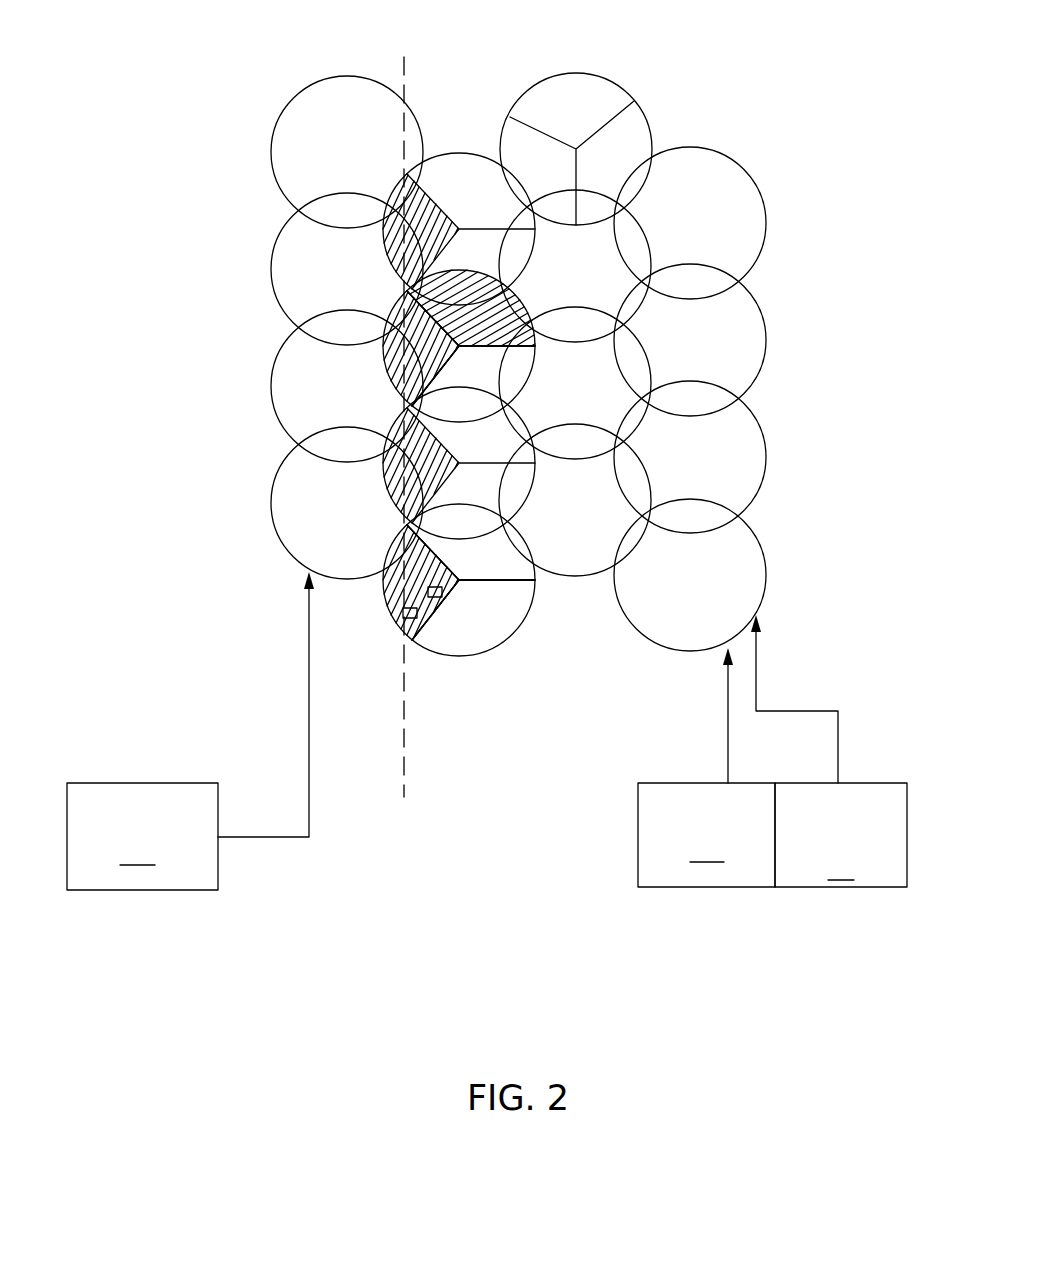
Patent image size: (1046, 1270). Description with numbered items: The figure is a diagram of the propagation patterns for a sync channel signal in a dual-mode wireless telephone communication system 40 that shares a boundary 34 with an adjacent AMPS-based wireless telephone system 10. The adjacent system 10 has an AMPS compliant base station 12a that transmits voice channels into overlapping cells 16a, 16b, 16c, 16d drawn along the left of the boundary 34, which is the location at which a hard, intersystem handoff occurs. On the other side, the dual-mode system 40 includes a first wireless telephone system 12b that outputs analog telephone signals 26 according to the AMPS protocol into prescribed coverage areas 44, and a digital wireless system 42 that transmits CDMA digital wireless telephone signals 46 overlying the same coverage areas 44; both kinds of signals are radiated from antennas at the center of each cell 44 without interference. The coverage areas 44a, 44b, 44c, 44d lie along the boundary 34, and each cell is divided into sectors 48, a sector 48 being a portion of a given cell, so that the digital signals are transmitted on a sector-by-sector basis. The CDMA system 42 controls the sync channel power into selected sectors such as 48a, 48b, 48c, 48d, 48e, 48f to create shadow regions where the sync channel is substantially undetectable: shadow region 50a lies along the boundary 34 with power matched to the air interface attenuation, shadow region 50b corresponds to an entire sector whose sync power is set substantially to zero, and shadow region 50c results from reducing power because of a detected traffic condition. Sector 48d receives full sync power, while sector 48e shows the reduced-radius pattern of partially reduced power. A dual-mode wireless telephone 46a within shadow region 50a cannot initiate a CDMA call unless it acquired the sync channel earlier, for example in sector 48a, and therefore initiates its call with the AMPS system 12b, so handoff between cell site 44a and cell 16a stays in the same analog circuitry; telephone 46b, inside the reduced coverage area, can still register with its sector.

The AMPS-based wireless telephone system 10 is at (245, 551).
The AMPS compliant base station 12a is at (142, 836).
The first wireless telephone system 12b is at (706, 835).
The cell 16a is at (272, 518).
The cell 16b is at (272, 382).
The cell 16c is at (272, 260).
The cell 16d is at (272, 148).
The analog telephone signals 26 is at (728, 735).
The boundary 34 is at (405, 737).
The dual-mode wireless telephone communication system 40 is at (703, 529).
The digital wireless system 42 is at (841, 835).
The prescribed coverage areas 44 is at (740, 163).
The cell site 44a is at (530, 613).
The coverage area 44b is at (533, 488).
The coverage area 44c is at (537, 358).
The coverage area 44d is at (533, 243).
The digital wireless telephone signals 46 is at (829, 711).
The dual-mode wireless telephone 46a is at (417, 614).
The dual-mode telephone 46b is at (442, 597).
The sector 48 is at (593, 78).
The sector 48a is at (503, 632).
The sector 48b is at (386, 610).
The sector 48c is at (535, 574).
The sector 48d is at (490, 373).
The sector 48e is at (400, 320).
The sector 48f is at (533, 317).
The shadow region 50a is at (392, 363).
The shadow region 50b is at (437, 182).
The shadow region 50c is at (455, 288).